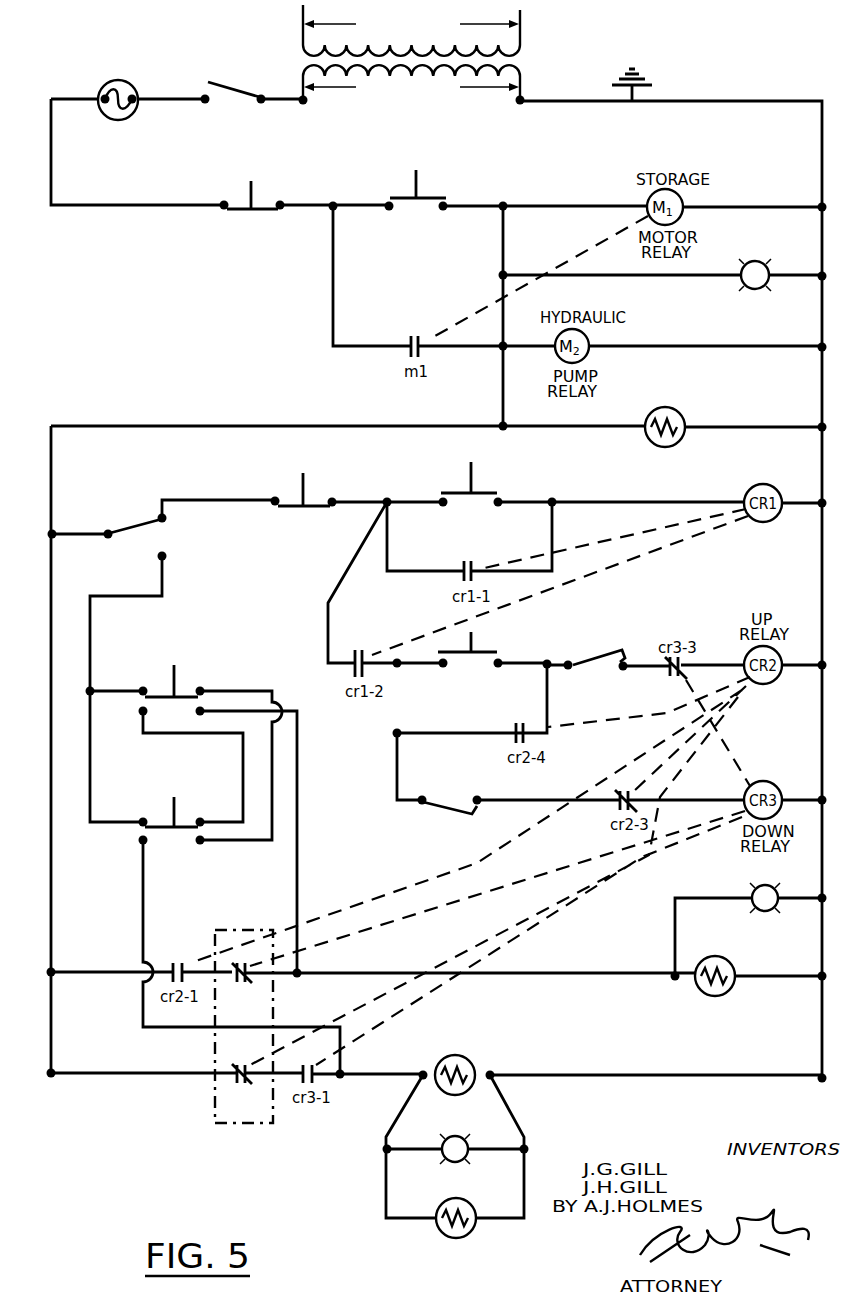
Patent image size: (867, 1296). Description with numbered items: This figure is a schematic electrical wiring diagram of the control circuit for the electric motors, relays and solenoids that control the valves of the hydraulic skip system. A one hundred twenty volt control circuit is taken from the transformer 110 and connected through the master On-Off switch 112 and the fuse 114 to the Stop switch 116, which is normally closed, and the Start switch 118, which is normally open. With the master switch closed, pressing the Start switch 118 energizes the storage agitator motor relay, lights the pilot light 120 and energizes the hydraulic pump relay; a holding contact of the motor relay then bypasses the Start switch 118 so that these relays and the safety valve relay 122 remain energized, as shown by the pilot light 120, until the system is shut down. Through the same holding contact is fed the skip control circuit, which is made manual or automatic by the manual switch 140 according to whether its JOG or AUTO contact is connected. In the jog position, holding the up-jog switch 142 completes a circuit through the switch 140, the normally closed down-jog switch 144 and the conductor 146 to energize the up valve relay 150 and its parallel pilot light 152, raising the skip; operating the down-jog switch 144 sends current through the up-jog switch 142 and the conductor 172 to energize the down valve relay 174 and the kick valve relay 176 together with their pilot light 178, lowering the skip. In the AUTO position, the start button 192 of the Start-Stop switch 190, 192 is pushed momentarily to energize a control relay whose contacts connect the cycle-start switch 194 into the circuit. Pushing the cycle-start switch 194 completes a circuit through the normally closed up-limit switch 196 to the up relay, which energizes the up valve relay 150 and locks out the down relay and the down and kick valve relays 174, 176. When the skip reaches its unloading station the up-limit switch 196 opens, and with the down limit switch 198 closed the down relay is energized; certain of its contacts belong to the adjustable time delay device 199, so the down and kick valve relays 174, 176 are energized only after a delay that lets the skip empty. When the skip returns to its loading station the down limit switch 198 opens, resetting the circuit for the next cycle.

The transformer 110 is at (535, 32).
The master On-Off switch 112 is at (228, 82).
The fuse 114 is at (128, 80).
The Stop switch 116 is at (253, 183).
The Start switch 118 is at (417, 170).
The pilot light 120 is at (749, 261).
The safety valve relay 122 is at (676, 408).
The manual switch 140 is at (130, 523).
The up-jog switch 142 is at (180, 694).
The down-jog switch 144 is at (163, 827).
The conductor 146 is at (298, 848).
The up valve relay 150 is at (707, 957).
The pilot light 152 is at (755, 884).
The conductor 172 is at (143, 902).
The down valve relay 174 is at (472, 1063).
The kick valve relay 176 is at (437, 1210).
The pilot light 178 is at (458, 1137).
The Stop switch 190 is at (297, 500).
The start button 192 is at (455, 493).
The cycle-start switch 194 is at (477, 650).
The up-limit switch 196 is at (597, 651).
The down limit switch 198 is at (452, 812).
The adjustable time delay device 199 is at (220, 931).